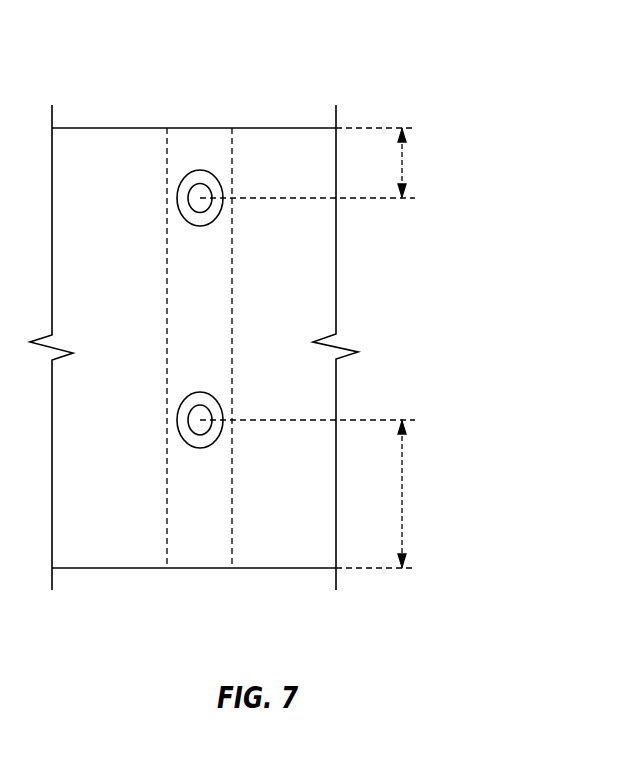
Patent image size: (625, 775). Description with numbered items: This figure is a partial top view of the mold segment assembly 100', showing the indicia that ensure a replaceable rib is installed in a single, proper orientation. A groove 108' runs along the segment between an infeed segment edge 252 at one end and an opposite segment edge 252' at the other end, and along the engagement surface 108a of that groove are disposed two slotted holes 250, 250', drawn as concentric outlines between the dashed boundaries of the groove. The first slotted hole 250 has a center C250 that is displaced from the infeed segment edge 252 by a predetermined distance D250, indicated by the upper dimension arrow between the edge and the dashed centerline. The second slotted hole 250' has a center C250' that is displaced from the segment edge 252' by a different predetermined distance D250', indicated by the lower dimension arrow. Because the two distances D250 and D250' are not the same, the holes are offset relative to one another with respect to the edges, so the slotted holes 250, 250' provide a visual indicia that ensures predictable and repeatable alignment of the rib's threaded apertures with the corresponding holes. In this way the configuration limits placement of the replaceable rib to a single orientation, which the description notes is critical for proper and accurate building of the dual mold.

The tubular member 100' is at (194, 303).
The infeed segment edge 252 is at (194, 94).
The segment edge 252' is at (194, 604).
The slotted hole 250 is at (239, 186).
The slotted hole 250' is at (243, 409).
The groove 108' is at (210, 376).
The engagement surface 108a is at (227, 528).
The center of hole 250 C250 is at (257, 216).
The center of hole 250' C250' is at (254, 438).
The predetermined distance D250 is at (418, 163).
The predetermined distance D250' is at (422, 494).